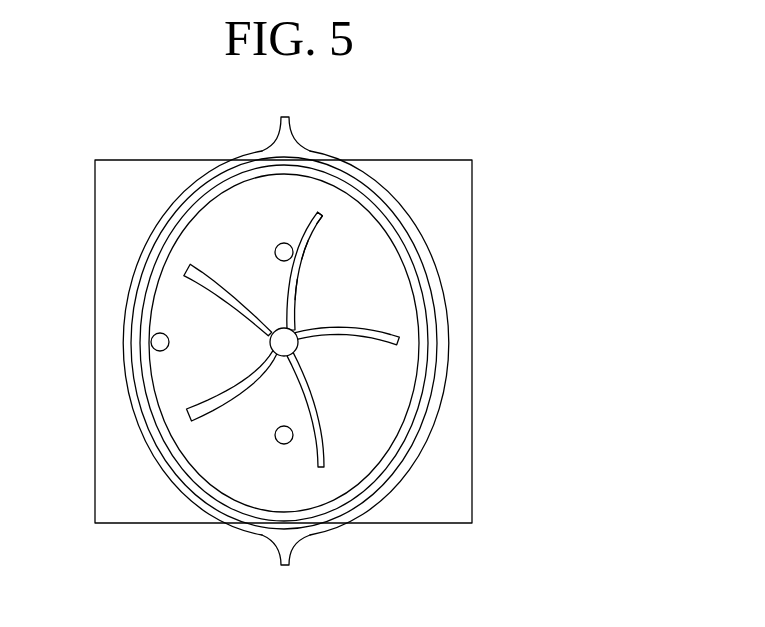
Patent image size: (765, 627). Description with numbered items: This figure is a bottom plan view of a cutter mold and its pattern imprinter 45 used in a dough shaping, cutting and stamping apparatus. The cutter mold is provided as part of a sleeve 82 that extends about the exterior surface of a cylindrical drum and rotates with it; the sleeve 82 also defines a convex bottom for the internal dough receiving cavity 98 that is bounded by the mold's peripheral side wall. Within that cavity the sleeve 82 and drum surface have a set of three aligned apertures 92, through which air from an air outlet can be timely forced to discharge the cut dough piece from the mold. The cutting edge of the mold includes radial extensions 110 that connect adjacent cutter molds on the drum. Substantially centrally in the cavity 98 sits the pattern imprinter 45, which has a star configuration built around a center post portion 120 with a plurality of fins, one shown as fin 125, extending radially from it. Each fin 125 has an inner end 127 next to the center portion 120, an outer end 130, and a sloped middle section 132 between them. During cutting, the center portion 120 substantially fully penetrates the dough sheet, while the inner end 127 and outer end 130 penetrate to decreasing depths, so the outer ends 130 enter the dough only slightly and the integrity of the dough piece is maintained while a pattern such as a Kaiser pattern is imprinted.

The pattern imprinter 45 is at (301, 356).
The sleeve 82 is at (447, 490).
The apertures 92 is at (276, 445).
The internal dough receiving cavity 98 is at (237, 234).
The radial extensions 110 is at (289, 120).
The center post portion 120 is at (300, 330).
The fin 125 is at (322, 221).
The inner end 127 is at (291, 312).
The outer end 130 is at (323, 220).
The sloped middle section 132 is at (305, 263).